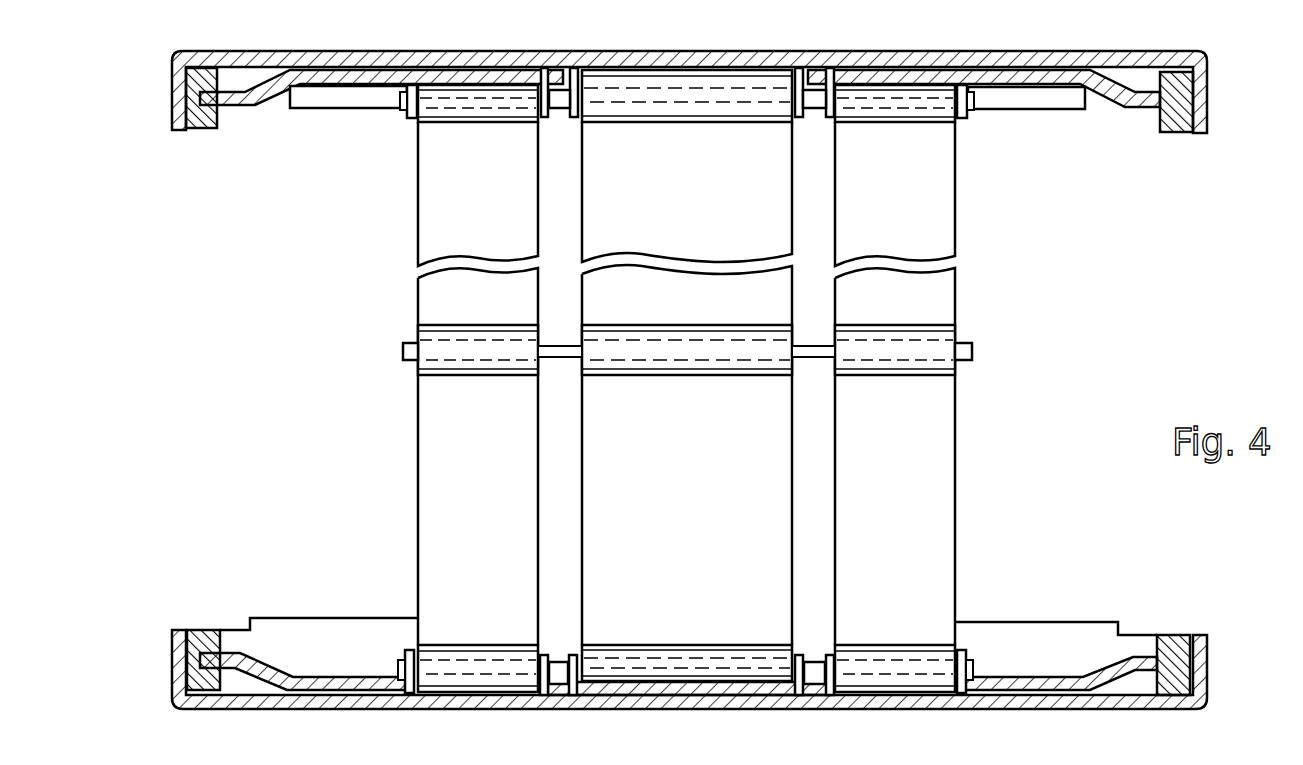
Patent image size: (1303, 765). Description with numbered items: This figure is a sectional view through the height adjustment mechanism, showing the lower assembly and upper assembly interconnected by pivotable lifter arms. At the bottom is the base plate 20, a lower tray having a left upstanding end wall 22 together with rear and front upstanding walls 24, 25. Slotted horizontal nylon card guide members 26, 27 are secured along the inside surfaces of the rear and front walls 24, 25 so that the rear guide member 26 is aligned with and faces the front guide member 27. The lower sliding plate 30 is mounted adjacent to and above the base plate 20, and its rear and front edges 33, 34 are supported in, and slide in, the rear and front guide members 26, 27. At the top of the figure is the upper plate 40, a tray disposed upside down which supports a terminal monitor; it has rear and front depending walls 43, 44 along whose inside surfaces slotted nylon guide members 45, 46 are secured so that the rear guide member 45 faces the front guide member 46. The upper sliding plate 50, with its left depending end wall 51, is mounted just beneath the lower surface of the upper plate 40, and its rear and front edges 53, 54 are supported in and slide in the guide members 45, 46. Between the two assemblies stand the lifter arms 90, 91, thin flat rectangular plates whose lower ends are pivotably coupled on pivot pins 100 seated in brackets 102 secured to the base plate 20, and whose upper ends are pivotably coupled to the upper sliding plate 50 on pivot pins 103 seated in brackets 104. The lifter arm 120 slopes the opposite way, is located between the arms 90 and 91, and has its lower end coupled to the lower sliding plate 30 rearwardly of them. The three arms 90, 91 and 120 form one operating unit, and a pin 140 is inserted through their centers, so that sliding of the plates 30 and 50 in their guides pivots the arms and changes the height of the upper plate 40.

The base plate 20 is at (1055, 709).
The left upstanding end wall 22 is at (268, 618).
The rear upstanding wall 24 is at (1209, 656).
The front upstanding wall 25 is at (172, 646).
The rear guide member 26 is at (1170, 635).
The front guide member 27 is at (206, 630).
The lower sliding plate 30 is at (346, 690).
The rear edge 33 is at (1180, 695).
The front edge 34 is at (215, 690).
The upper plate 40 is at (660, 52).
The rear depending wall 43 is at (1210, 96).
The front depending wall 44 is at (172, 84).
The rear guide member 45 is at (1180, 133).
The front guide member 46 is at (196, 130).
The upper sliding plate 50 is at (336, 56).
The left depending end wall 51 is at (328, 104).
The rear edge 53 is at (228, 107).
The front edge 54 is at (1150, 108).
The lifter arm 90 is at (497, 478).
The lifter arm 91 is at (910, 478).
The pivot pin 100 is at (400, 666).
The bracket 102 is at (405, 650).
The pivot pin 103 is at (402, 110).
The bracket 104 is at (963, 121).
The lifter arm 120 is at (702, 478).
The pin 140 is at (976, 346).